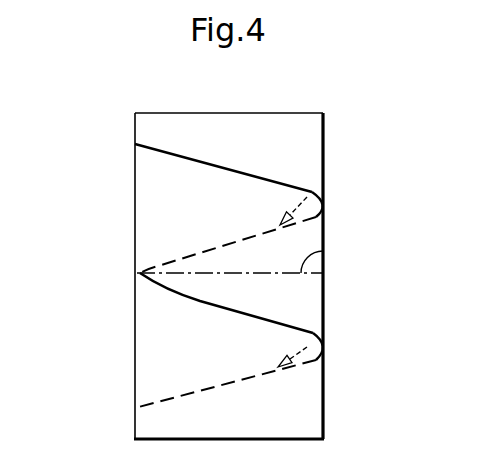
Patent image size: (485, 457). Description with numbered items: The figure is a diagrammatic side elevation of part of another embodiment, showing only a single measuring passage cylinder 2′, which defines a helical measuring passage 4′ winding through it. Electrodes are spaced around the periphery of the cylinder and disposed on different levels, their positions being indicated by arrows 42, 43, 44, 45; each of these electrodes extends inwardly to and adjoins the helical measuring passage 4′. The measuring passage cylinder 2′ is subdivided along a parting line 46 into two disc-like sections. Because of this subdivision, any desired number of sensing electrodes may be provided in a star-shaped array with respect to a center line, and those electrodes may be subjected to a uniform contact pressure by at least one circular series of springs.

The measuring passage cylinder 2′ is at (316, 131).
The helical measuring passage 4′ is at (232, 270).
The electrode 42 is at (318, 326).
The electrode 43 is at (174, 300).
The electrode 44 is at (318, 185).
The electrode 45 is at (176, 163).
The parting line 46 is at (325, 254).